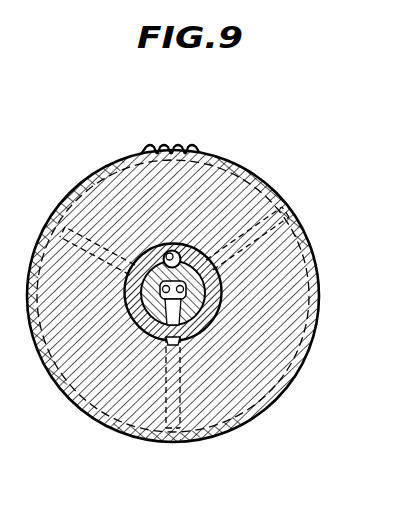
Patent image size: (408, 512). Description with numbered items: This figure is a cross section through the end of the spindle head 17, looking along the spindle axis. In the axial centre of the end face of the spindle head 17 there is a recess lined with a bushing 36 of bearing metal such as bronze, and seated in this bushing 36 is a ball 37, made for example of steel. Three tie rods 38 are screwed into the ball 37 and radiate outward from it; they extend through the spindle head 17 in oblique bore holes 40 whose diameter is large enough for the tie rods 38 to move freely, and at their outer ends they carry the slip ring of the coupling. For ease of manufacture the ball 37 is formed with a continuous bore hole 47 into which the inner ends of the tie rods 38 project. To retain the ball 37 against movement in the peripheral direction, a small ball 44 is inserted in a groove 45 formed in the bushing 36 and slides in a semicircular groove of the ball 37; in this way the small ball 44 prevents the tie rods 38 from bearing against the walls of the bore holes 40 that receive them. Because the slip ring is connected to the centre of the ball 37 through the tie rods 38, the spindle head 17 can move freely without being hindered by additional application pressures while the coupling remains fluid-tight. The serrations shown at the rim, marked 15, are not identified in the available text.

The serrated teeth 15 is at (199, 150).
The spindle head 17 is at (319, 277).
The bushing 36 is at (222, 300).
The ball 37 is at (206, 326).
The tie rods 38 is at (298, 213).
The oblique bore holes 40 is at (289, 191).
The small ball 44 is at (198, 248).
The groove 45 is at (166, 250).
The continuous bore hole 47 is at (132, 318).